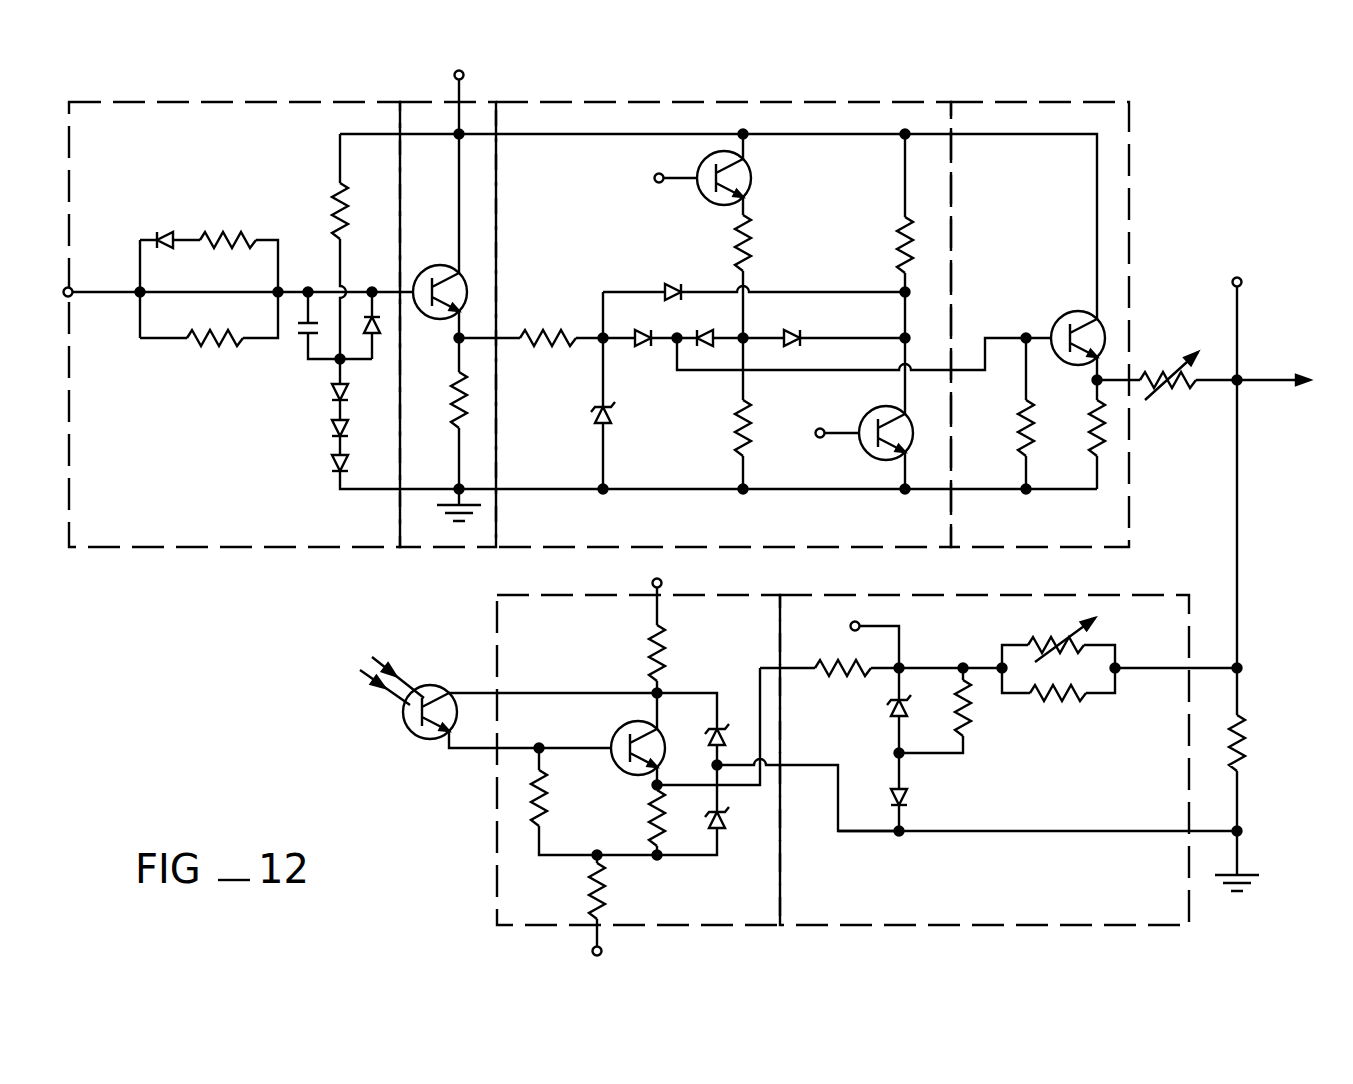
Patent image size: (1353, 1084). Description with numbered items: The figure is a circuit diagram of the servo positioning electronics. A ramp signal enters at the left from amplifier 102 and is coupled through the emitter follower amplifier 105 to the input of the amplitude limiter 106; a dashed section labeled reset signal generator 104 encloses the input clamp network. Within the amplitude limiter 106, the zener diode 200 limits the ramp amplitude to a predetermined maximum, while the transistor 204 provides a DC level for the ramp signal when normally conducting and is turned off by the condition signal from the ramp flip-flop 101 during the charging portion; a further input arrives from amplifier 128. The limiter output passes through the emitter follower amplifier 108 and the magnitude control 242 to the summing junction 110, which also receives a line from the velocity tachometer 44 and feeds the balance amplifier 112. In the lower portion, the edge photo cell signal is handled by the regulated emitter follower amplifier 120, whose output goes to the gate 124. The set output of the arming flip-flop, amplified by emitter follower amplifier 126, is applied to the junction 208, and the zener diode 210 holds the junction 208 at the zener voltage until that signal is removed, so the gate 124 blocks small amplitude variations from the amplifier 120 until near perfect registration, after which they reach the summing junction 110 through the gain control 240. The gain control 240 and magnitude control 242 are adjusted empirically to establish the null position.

The reset signal generator 104 is at (205, 157).
The emitter follower amplifier 105 is at (447, 180).
The amplitude limiter 106 is at (848, 203).
The emitter follower amplifier 108 is at (1047, 203).
The regulated emitter follower amplifier 120 is at (585, 647).
The gate 124 is at (1040, 893).
The zener diode 200 is at (613, 412).
The transistor 204 is at (708, 200).
The junction 208 is at (901, 666).
The zener diode 210 is at (886, 712).
The gain control 240 is at (1051, 638).
The magnitude control 242 is at (1170, 388).
The summing junction 110 is at (1238, 378).
The balance amplifier 112 is at (1288, 384).
The velocity tachometer 44 is at (1240, 257).
The ramp flip-flop 101 is at (609, 191).
The amplifier input 102 is at (89, 309).
The emitter follower amplifier 126 is at (870, 633).
The amplifier input 128 is at (850, 445).